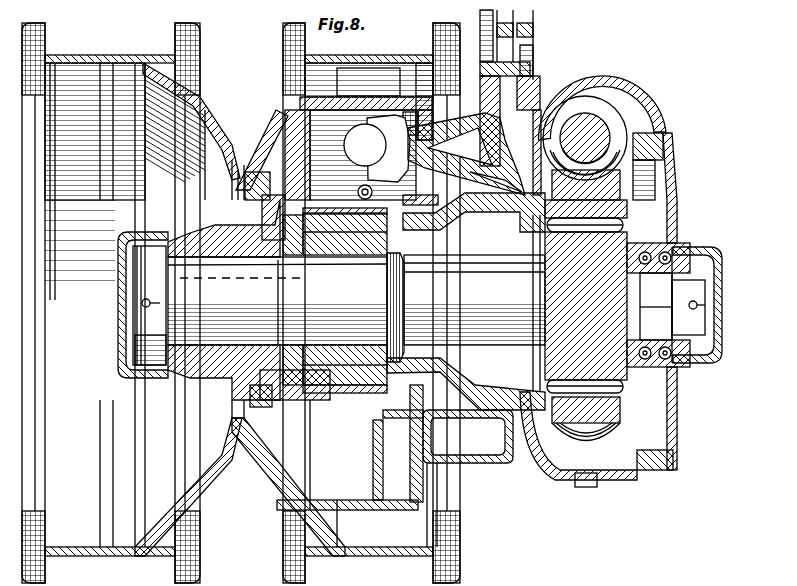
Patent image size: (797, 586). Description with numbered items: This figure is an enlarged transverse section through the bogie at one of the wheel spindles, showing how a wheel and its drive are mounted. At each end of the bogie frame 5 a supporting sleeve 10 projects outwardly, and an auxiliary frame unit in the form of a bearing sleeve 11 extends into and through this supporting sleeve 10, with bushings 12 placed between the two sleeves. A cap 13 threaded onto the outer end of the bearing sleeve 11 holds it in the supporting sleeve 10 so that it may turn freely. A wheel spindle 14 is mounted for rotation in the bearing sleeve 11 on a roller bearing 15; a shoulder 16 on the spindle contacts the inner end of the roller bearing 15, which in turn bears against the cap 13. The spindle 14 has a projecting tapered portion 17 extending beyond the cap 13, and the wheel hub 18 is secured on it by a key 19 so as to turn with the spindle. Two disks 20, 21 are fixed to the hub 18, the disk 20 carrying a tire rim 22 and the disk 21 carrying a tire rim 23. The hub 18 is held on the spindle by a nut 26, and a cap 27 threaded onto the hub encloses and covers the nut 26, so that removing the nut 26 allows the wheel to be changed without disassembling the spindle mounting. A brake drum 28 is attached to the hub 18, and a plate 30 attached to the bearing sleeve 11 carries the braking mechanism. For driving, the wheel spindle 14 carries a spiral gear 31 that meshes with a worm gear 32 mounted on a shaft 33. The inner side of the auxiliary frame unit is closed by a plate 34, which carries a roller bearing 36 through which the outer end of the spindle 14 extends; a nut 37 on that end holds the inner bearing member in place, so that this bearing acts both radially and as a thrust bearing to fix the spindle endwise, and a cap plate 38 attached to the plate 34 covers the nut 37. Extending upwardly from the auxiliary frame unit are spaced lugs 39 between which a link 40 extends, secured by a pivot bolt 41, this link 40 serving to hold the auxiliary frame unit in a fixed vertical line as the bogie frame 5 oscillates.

The bogie frame 5 is at (491, 464).
The supporting sleeve 10 is at (394, 393).
The bearing sleeve 11 is at (443, 378).
The bushings 12 is at (327, 380).
The cap 13 is at (312, 244).
The wheel spindle 14 is at (418, 286).
The roller bearing 15 is at (370, 262).
The shoulder 16 is at (392, 310).
The tapered portion 17 is at (212, 330).
The hub 18 is at (218, 240).
The key 19 is at (243, 262).
The disk 20 is at (206, 100).
The disk 21 is at (272, 122).
The tire rim 22 is at (94, 57).
The tire rim 23 is at (383, 57).
The nut 26 is at (146, 352).
The cap 27 is at (122, 298).
The brake drum 28 is at (312, 100).
The plate 30 is at (422, 193).
The spiral gear 31 is at (575, 423).
The worm gear 32 is at (592, 100).
The shaft 33 is at (602, 128).
The plate 34 is at (674, 176).
The roller bearing 36 is at (676, 243).
The nut 37 is at (688, 265).
The cap plate 38 is at (718, 272).
The lugs 39 is at (534, 42).
The link 40 is at (506, 24).
The pivot bolt 41 is at (534, 64).